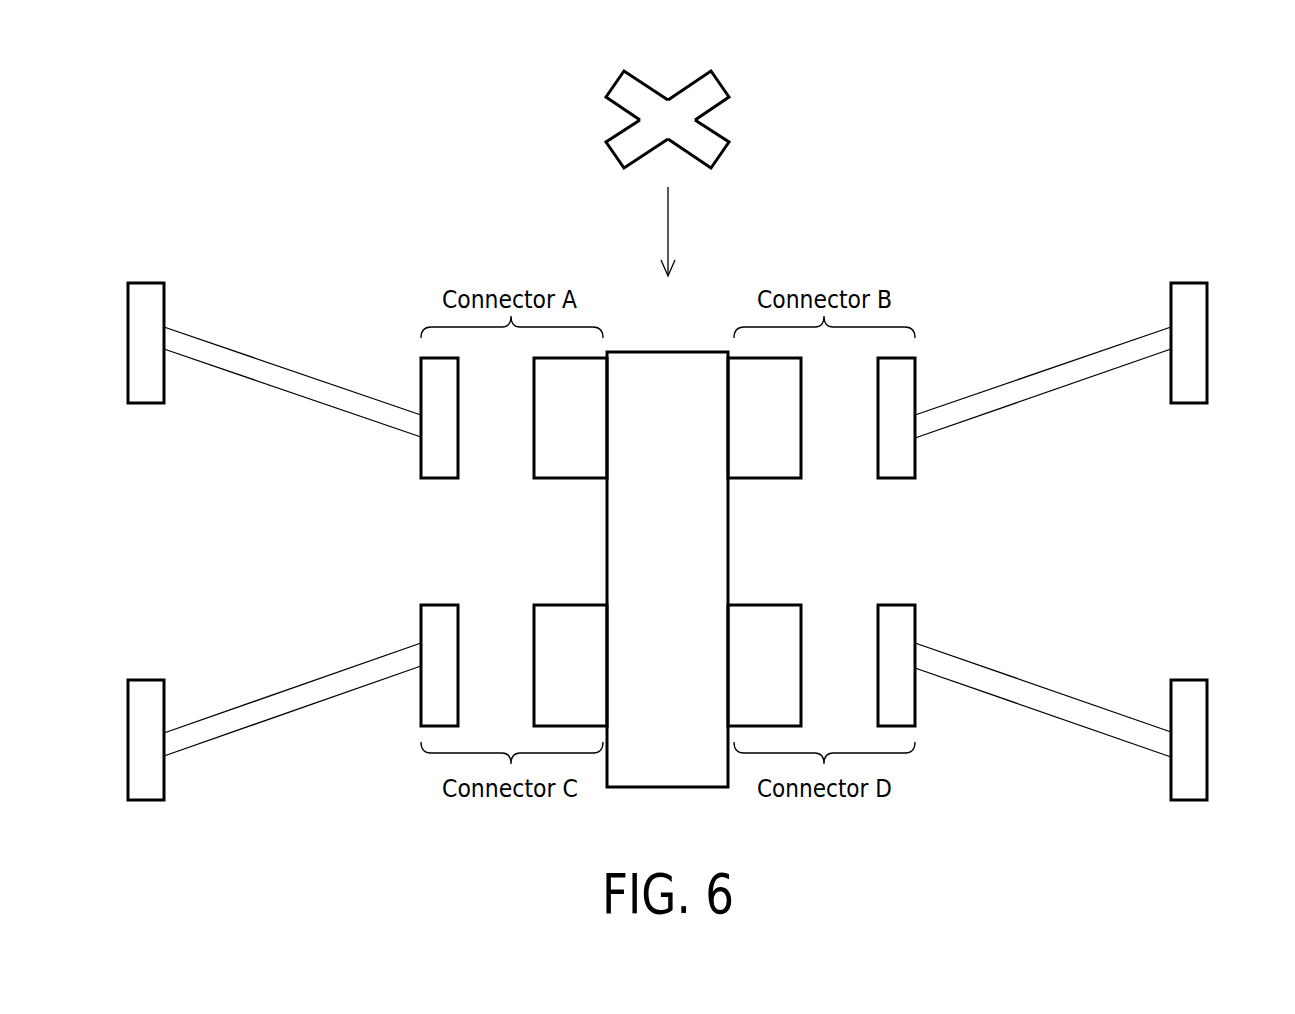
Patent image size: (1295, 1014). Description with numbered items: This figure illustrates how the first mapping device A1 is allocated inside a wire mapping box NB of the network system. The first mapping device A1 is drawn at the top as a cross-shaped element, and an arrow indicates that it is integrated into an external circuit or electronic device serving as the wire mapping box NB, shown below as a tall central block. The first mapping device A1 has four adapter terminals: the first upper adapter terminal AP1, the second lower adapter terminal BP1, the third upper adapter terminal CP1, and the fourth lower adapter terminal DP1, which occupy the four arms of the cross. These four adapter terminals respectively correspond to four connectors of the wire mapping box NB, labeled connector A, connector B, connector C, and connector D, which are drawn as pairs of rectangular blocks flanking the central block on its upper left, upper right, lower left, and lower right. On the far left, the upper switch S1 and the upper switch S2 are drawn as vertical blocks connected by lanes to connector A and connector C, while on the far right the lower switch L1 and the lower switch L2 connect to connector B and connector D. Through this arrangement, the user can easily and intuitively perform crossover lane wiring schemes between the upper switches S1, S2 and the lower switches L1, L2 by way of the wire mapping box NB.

The first mapping device A1 is at (668, 93).
The first upper adapter terminal AP1 is at (620, 80).
The second lower adapter terminal BP1 is at (719, 82).
The third upper adapter terminal CP1 is at (620, 153).
The fourth lower adapter terminal DP1 is at (719, 155).
The wire mapping box NB is at (667, 787).
The upper switch S1 is at (128, 340).
The upper switch S2 is at (128, 738).
The lower switch L1 is at (1207, 341).
The lower switch L2 is at (1207, 738).